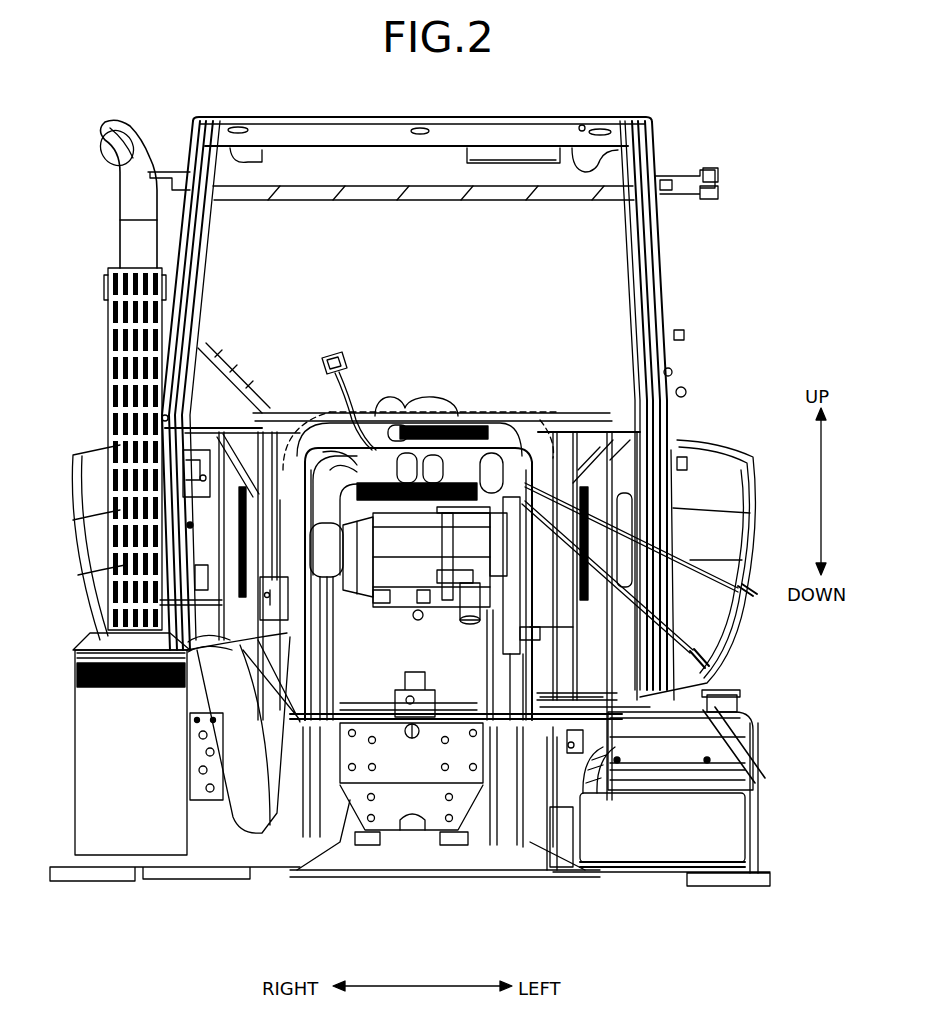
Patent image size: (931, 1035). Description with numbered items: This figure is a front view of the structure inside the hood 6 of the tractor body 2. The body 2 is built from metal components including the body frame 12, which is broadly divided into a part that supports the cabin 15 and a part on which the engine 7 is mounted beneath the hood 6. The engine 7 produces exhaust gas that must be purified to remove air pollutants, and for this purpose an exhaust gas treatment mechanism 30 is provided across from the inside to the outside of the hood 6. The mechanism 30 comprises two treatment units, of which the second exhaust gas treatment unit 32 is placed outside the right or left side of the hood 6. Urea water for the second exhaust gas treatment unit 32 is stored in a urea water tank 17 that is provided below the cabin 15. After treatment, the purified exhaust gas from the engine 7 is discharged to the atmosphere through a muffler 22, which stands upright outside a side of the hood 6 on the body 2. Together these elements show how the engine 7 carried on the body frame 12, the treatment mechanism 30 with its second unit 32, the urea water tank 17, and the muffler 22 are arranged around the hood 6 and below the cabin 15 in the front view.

The body 2 is at (684, 262).
The cabin 15 is at (668, 292).
The muffler 22 is at (108, 340).
The exhaust gas treatment mechanism 30 is at (288, 366).
The hood 6 is at (499, 400).
The engine 7 is at (358, 672).
The body frame 12 is at (433, 805).
The second exhaust gas treatment unit 32 is at (73, 752).
The urea water tank 17 is at (762, 740).